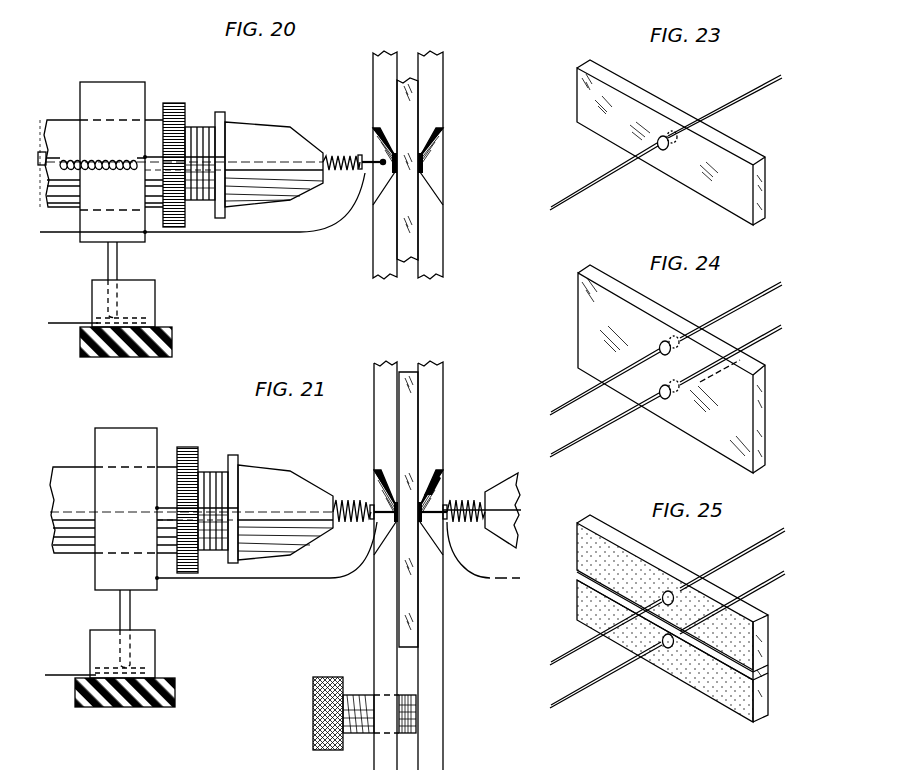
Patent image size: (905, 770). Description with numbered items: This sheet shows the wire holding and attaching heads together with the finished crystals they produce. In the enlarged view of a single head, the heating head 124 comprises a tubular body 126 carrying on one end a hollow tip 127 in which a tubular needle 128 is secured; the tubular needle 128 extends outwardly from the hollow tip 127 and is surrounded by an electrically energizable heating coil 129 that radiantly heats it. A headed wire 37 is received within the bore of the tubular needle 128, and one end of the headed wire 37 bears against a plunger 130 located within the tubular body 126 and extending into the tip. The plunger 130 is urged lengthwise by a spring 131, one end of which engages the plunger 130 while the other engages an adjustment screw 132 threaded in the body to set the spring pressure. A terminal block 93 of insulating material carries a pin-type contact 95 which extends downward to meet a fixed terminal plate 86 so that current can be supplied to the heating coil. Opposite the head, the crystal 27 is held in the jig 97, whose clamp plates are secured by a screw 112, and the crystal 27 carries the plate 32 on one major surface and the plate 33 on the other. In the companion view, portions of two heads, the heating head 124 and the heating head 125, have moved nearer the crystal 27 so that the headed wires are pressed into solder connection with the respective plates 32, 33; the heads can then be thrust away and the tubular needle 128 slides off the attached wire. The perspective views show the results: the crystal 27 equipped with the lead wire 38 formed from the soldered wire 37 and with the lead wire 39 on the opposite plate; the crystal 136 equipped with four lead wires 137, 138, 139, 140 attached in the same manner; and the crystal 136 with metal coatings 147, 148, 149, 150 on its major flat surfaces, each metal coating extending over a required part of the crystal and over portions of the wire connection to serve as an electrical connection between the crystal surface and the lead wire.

In FIG. 20, the crystal 27 is at (409, 250).
In FIG. 21, the crystal 27 is at (407, 372).
In FIG. 23, the crystal 27 is at (614, 83).
In FIG. 20, the plate 32 is at (392, 170).
In FIG. 21, the plate 32 is at (392, 495).
In FIG. 21, the plate 33 is at (426, 484).
In FIG. 20, the headed wire 37 is at (358, 172).
In FIG. 21, the headed wire 37 is at (375, 525).
In FIG. 21, the lead wire 38 is at (433, 508).
In FIG. 23, the lead wire 38 is at (598, 183).
In FIG. 23, the lead wire 39 is at (750, 99).
In FIG. 20, the fixed terminal plate 86 is at (135, 318).
In FIG. 21, the fixed terminal plate 86 is at (137, 676).
In FIG. 20, the terminal block 93 is at (132, 82).
In FIG. 21, the terminal block 93 is at (136, 440).
In FIG. 20, the pin-type contact 95 is at (118, 270).
In FIG. 21, the pin-type contact 95 is at (131, 620).
In FIG. 20, the jig 97 is at (443, 56).
In FIG. 21, the jig 97 is at (436, 364).
In FIG. 21, the screw 112 is at (313, 697).
In FIG. 21, the heating head 124 is at (75, 455).
In FIG. 21, the heating head 125 is at (508, 484).
In FIG. 20, the tubular body 126 is at (68, 132).
In FIG. 21, the tubular body 126 is at (66, 474).
In FIG. 20, the hollow tip 127 is at (255, 126).
In FIG. 21, the hollow tip 127 is at (257, 470).
In FIG. 20, the tubular needle 128 is at (343, 157).
In FIG. 21, the tubular needle 128 is at (362, 510).
In FIG. 20, the heating coil 129 is at (352, 135).
In FIG. 21, the heating coil 129 is at (361, 522).
In FIG. 20, the plunger 130 is at (156, 153).
In FIG. 21, the plunger 130 is at (207, 510).
In FIG. 20, the spring 131 is at (75, 168).
In FIG. 20, the adjustment screw 132 is at (41, 150).
In FIG. 24, the crystal 136 is at (762, 412).
In FIG. 25, the crystal 136 is at (760, 638).
In FIG. 24, the lead wire 137 is at (562, 408).
In FIG. 25, the lead wire 137 is at (560, 660).
In FIG. 24, the lead wire 138 is at (745, 302).
In FIG. 25, the lead wire 138 is at (745, 556).
In FIG. 24, the lead wire 139 is at (597, 434).
In FIG. 25, the lead wire 139 is at (578, 696).
In FIG. 24, the lead wire 140 is at (770, 334).
In FIG. 25, the lead wire 140 is at (772, 582).
In FIG. 25, the metal coating 147 is at (585, 552).
In FIG. 25, the metal coating 148 is at (663, 555).
In FIG. 25, the metal coating 149 is at (692, 676).
In FIG. 25, the metal coating 150 is at (765, 692).